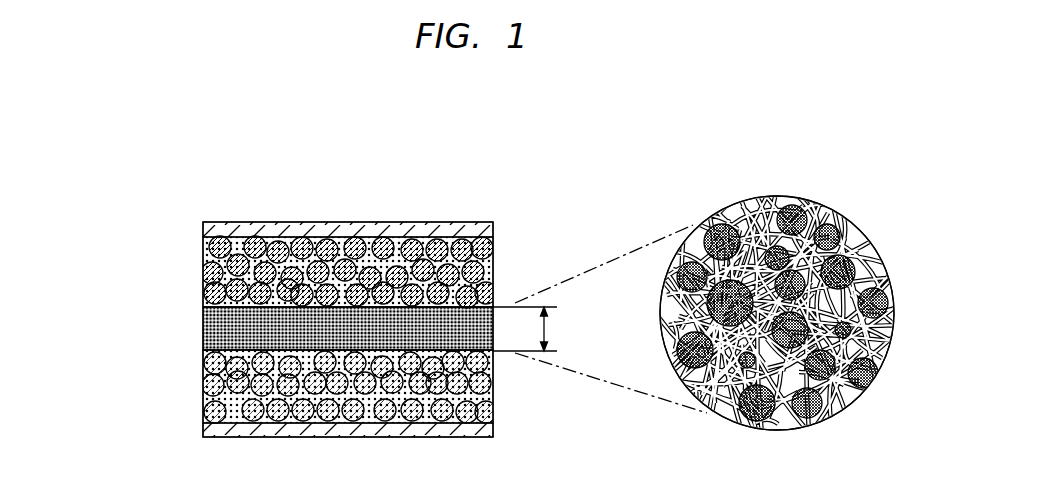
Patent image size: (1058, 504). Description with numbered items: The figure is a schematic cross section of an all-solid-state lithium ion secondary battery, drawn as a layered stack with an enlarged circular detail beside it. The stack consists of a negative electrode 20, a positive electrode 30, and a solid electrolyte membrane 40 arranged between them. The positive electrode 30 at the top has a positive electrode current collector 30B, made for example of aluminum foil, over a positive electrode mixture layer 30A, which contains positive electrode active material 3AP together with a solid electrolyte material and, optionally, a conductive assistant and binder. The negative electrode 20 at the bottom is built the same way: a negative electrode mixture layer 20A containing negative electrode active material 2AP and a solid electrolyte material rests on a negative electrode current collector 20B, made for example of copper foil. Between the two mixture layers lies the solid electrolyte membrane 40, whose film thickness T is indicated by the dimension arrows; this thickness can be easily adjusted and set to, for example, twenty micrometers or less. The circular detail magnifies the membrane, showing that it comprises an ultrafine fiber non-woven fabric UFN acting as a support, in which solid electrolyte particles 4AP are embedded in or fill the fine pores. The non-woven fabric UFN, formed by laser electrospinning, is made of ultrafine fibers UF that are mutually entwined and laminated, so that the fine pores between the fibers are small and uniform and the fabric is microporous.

The positive electrode 30 is at (272, 260).
The positive electrode current collector 30B is at (203, 226).
The positive electrode mixture layer 30A is at (203, 268).
The solid electrolyte membrane 40 is at (203, 318).
The negative electrode 20 is at (272, 400).
The negative electrode mixture layer 20A is at (203, 382).
The negative electrode current collector 20B is at (203, 430).
The positive electrode active material 3AP is at (493, 277).
The negative electrode active material 2AP is at (493, 381).
The film thickness T is at (534, 329).
The solid electrolyte particles 4AP is at (847, 223).
The ultrafine fibers UF is at (873, 268).
The ultrafine fiber non-woven fabric UFN is at (866, 396).